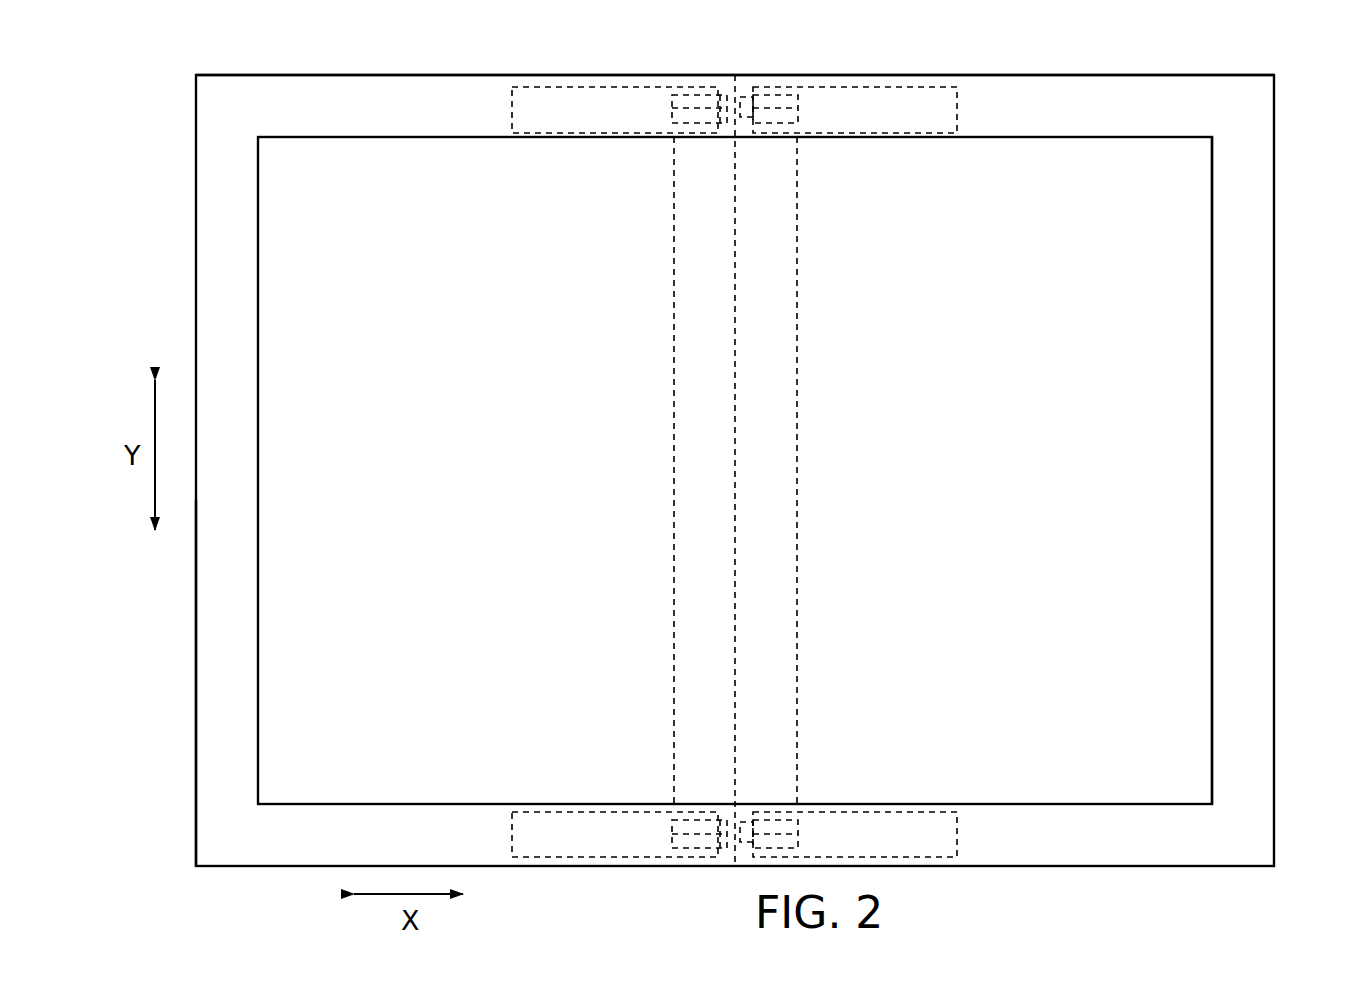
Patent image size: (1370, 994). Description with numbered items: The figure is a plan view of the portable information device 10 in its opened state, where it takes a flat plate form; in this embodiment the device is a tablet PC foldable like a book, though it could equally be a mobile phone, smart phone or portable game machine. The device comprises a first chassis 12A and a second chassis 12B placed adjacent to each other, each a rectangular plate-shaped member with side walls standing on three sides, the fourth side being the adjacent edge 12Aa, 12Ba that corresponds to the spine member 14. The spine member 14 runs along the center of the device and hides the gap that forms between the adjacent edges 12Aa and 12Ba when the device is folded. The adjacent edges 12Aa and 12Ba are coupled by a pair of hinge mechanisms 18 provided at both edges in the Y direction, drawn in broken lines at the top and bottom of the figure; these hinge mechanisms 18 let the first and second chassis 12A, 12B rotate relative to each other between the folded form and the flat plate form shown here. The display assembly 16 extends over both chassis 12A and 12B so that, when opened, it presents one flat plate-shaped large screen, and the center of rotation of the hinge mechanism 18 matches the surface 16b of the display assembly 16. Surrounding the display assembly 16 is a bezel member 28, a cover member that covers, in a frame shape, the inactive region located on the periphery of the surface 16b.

The portable information device 10 is at (149, 51).
The first chassis 12A is at (452, 73).
The second chassis 12B is at (1086, 73).
The adjacent edge 12Aa is at (737, 474).
The adjacent edge 12Ba is at (735, 445).
The spine member 14 is at (800, 522).
The display assembly 16 is at (297, 266).
The surface of the display assembly 16b is at (1186, 374).
The hinge mechanism 18 is at (847, 72).
The bezel member 28 is at (206, 745).